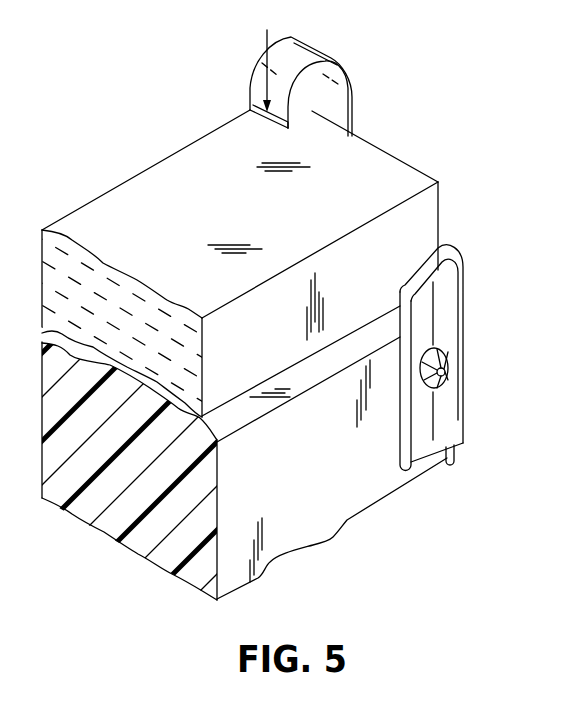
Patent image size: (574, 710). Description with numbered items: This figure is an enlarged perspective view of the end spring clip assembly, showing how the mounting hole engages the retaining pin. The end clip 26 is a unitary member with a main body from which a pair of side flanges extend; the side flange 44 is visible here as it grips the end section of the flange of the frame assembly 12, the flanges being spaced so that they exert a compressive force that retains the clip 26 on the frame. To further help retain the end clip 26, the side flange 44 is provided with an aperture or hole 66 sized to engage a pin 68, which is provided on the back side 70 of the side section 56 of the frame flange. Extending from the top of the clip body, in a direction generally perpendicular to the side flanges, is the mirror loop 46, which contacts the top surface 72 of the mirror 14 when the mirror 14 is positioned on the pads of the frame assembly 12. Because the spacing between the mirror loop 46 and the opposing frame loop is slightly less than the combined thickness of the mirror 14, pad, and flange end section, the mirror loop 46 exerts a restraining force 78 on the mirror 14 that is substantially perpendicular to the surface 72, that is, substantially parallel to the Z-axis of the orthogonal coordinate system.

The frame assembly 12 is at (274, 475).
The mirror 14 is at (243, 269).
The end clip 26 is at (471, 381).
The side flange 44 is at (448, 465).
The mirror loop 46 is at (320, 50).
The side section 56 is at (334, 539).
The aperture 66 is at (448, 355).
The pin 68 is at (443, 376).
The back side 70 is at (325, 478).
The top surface 72 is at (391, 180).
The restraining force 78 is at (267, 36).